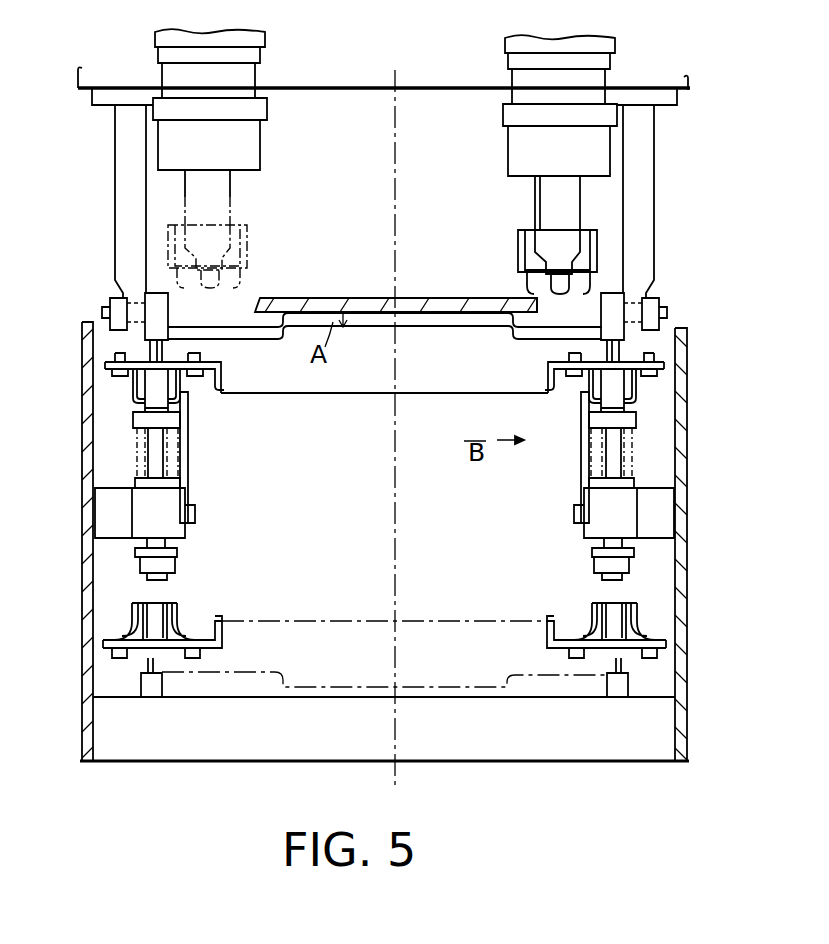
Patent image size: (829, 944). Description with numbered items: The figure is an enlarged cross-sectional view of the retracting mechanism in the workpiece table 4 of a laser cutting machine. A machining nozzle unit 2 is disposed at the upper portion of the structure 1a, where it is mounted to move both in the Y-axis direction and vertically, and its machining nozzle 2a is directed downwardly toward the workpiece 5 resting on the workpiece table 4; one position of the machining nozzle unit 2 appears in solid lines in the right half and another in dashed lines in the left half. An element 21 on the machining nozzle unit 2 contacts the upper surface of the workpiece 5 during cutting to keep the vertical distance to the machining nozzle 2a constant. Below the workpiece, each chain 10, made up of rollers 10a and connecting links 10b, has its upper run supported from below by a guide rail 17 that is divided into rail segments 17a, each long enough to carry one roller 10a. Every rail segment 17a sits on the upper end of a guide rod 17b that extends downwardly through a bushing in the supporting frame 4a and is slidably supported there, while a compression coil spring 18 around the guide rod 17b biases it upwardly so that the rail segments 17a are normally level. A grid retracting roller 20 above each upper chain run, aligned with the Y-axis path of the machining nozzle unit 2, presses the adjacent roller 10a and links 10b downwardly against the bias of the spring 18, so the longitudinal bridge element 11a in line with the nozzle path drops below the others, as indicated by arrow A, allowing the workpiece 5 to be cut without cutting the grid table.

The structure 1a is at (663, 84).
The machining nozzle unit 2 is at (168, 70).
The machining nozzle 2a is at (545, 205).
The workpiece table 4 is at (690, 692).
The supporting frame 4a is at (602, 525).
The workpiece 5 is at (352, 297).
The chain 10 is at (738, 374).
The roller 10a is at (613, 405).
The link 10b is at (625, 386).
The longitudinal bridge element 11a is at (437, 395).
The guide rail 17 is at (738, 434).
The rail segment 17a is at (627, 432).
The guide rod 17b is at (612, 460).
The compression coil spring 18 is at (668, 490).
The grid retracting roller 20 is at (148, 290).
The element 21 is at (535, 297).